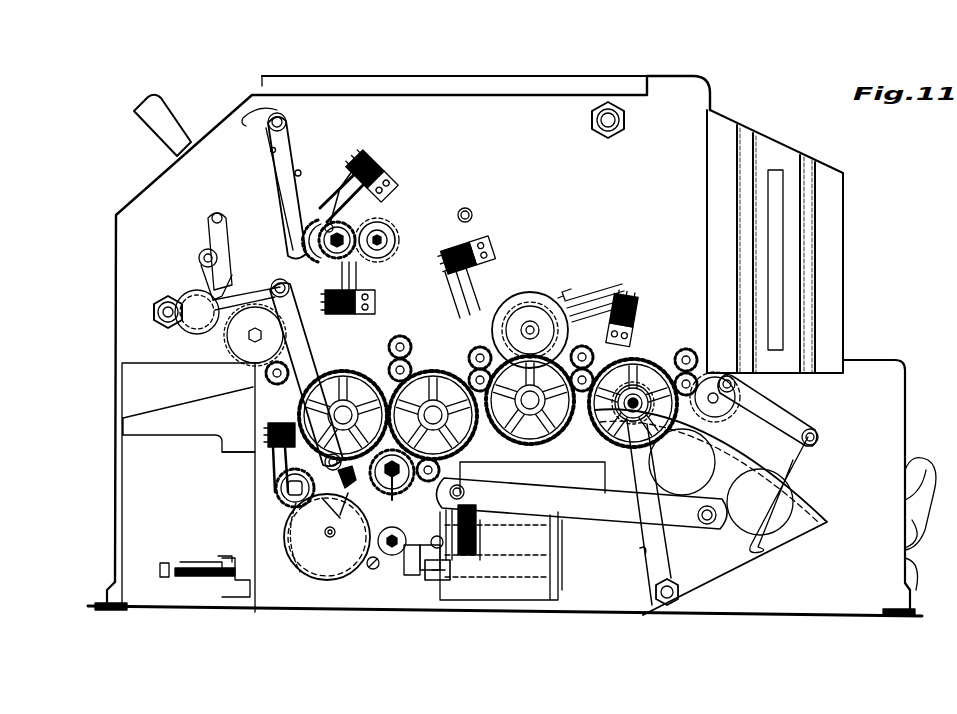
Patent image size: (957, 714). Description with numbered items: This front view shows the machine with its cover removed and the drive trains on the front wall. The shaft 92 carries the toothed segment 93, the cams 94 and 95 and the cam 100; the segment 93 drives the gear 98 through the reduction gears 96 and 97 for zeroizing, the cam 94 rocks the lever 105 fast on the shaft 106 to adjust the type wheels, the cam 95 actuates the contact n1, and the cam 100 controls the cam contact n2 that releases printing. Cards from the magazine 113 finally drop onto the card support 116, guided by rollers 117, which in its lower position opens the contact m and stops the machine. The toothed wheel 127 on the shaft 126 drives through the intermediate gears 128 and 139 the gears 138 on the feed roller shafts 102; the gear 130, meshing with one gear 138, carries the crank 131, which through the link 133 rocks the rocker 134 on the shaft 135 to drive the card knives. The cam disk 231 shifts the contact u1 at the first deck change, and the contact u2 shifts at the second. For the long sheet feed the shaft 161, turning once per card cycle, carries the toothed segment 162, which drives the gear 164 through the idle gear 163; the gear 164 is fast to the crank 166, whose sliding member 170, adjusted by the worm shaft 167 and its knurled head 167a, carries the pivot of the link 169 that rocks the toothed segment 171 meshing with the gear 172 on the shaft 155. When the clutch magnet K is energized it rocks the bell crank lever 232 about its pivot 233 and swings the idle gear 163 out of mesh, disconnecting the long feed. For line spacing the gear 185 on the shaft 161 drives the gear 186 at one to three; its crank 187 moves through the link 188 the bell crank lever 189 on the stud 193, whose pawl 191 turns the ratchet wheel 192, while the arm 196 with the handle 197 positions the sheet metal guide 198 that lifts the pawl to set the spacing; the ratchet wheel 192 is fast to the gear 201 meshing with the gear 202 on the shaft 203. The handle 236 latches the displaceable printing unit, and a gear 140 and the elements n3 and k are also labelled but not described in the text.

The magazine 113 is at (830, 303).
The handle 236 is at (150, 122).
The lever 105 is at (280, 143).
The shaft 106 is at (275, 118).
The handle 197 is at (212, 218).
The arm 196 is at (212, 238).
The bell crank lever 189 is at (204, 257).
The sheet metal guide 198 is at (228, 280).
The pawl 191 is at (213, 300).
The stud 193 is at (165, 310).
The ratchet wheel 192 is at (160, 314).
The gear 201 is at (200, 312).
The shaft 203 is at (252, 336).
The gear 202 is at (243, 368).
The gears 138 is at (268, 376).
The card support 116 is at (140, 434).
The rollers 117 is at (248, 453).
The link 188 is at (276, 452).
The crank 187 is at (285, 484).
The toothed wheel 127 is at (322, 497).
The contact n3 is at (268, 536).
The shafts 102 is at (390, 368).
The contact u2 is at (470, 325).
The cam disk 231 is at (537, 298).
The intermediate gear 139 is at (550, 395).
The contact u1 is at (592, 297).
The gear 140 is at (665, 375).
The shaft 155 is at (638, 412).
The gear 172 is at (630, 408).
The toothed segment 93 is at (322, 242).
The shaft 92 is at (325, 228).
The gear 96 is at (392, 238).
The gear 97 is at (386, 232).
The cam 94 is at (365, 162).
The cam disk 95 is at (355, 192).
The cam 100 is at (336, 222).
The gear 98 is at (329, 225).
The contact n1 is at (345, 205).
The cam contact n2 is at (362, 262).
The crank 131 is at (725, 396).
The link 133 is at (773, 410).
The gear 130 is at (730, 405).
The rocker 134 is at (805, 456).
The shaft 135 is at (760, 540).
The toothed segment 171 is at (707, 570).
The knurled head 167a is at (470, 484).
The intermediate gear 128 is at (465, 472).
The link 169 is at (674, 515).
The crank 166 is at (470, 547).
The sliding member 170 is at (482, 527).
The contact k is at (470, 560).
The bell crank lever 232 is at (450, 580).
The clutch magnet K is at (418, 594).
The worm shaft 167 is at (432, 570).
The pivot 233 is at (440, 548).
The gear 164 is at (415, 575).
The idle gear 163 is at (380, 570).
The shaft 126 is at (387, 580).
The gear 186 is at (341, 520).
The shaft 161 is at (327, 548).
The toothed segment 162 is at (305, 543).
The gear 185 is at (330, 537).
The contact m is at (172, 580).